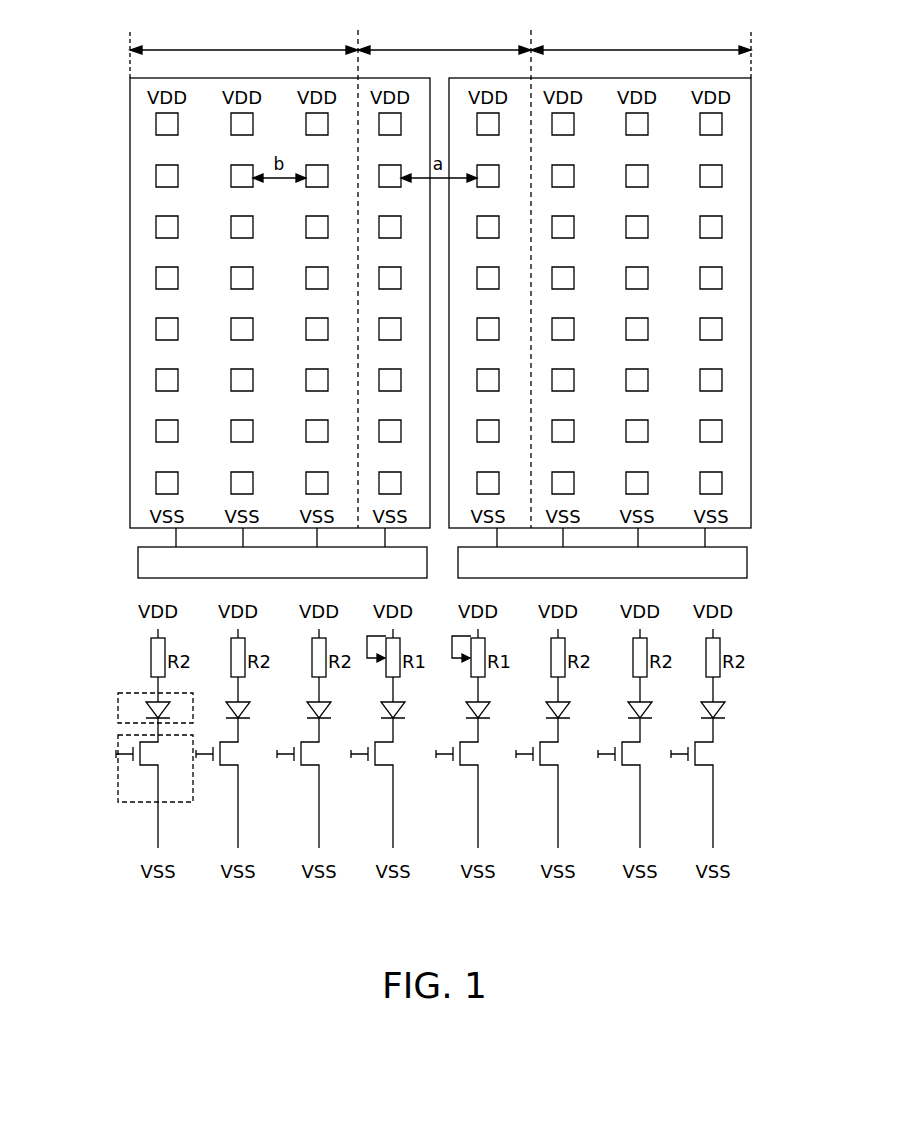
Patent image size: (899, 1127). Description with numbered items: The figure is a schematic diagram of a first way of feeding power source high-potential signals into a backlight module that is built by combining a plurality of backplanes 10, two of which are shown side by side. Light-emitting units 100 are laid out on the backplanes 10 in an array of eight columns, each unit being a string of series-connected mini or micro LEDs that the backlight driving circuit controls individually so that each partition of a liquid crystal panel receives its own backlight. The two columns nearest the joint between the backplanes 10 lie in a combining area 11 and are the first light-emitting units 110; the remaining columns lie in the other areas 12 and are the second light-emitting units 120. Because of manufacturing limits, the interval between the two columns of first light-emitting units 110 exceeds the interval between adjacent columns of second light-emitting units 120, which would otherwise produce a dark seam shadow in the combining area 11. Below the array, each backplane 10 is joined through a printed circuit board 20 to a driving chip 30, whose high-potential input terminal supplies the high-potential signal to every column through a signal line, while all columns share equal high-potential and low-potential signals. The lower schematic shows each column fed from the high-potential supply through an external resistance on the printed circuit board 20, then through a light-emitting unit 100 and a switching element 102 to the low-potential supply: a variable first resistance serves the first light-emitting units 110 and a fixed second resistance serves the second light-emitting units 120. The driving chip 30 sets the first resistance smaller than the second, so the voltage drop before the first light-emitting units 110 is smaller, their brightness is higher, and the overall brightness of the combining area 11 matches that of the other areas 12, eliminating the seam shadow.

The backplane 10 is at (130, 150).
The combining area 11 is at (444, 277).
The other area 12 is at (440, 40).
The printed circuit board 20 is at (185, 548).
The driving chip 30 is at (157, 572).
The light-emitting unit 100 is at (118, 706).
The driving transistor 102 is at (118, 774).
The first light-emitting unit 110 is at (493, 128).
The second light-emitting unit 120 is at (162, 183).